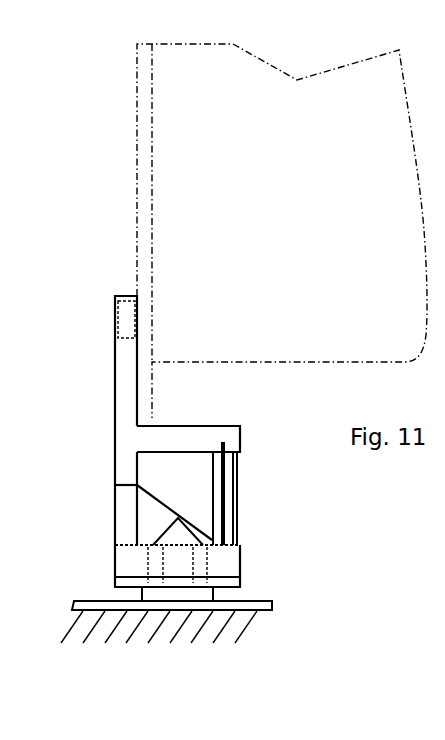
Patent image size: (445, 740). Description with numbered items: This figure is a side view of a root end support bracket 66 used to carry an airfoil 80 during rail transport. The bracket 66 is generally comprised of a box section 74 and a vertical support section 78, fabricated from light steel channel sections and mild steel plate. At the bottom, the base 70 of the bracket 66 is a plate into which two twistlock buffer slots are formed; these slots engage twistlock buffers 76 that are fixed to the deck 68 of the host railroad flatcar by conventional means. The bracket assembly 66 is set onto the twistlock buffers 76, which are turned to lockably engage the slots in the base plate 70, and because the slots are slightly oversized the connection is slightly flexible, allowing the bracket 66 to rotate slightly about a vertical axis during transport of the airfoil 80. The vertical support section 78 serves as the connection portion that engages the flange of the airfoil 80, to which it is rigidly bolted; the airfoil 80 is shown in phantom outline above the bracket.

The root end support bracket 66 is at (274, 467).
The deck 68 is at (272, 608).
The base 70 is at (115, 583).
The box section 74 is at (240, 451).
The twistlock buffers 76 is at (162, 528).
The vertical support section 78 is at (115, 370).
The airfoil 80 is at (152, 351).